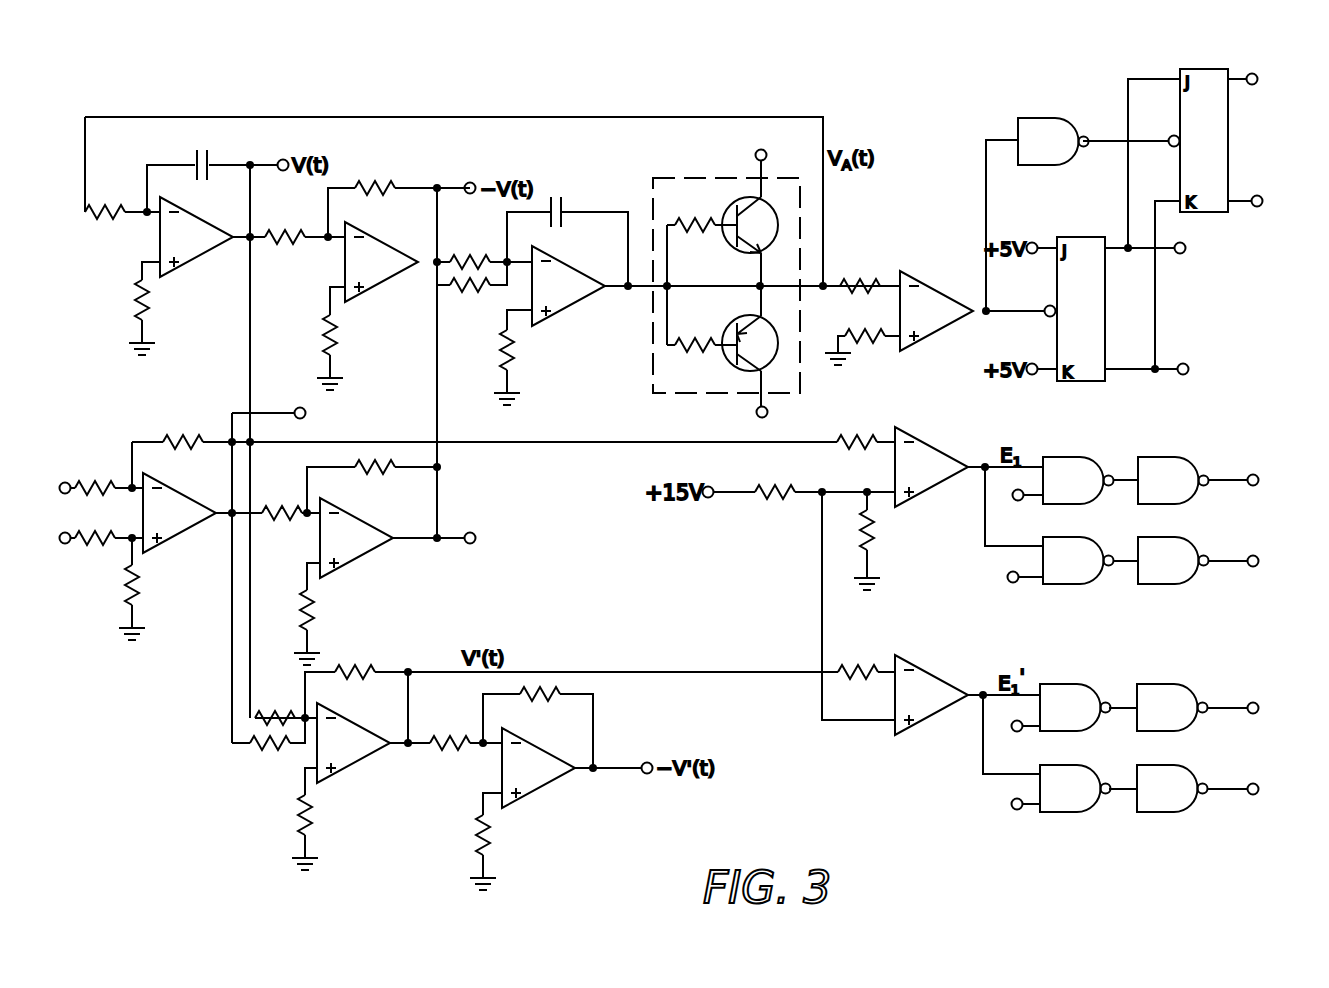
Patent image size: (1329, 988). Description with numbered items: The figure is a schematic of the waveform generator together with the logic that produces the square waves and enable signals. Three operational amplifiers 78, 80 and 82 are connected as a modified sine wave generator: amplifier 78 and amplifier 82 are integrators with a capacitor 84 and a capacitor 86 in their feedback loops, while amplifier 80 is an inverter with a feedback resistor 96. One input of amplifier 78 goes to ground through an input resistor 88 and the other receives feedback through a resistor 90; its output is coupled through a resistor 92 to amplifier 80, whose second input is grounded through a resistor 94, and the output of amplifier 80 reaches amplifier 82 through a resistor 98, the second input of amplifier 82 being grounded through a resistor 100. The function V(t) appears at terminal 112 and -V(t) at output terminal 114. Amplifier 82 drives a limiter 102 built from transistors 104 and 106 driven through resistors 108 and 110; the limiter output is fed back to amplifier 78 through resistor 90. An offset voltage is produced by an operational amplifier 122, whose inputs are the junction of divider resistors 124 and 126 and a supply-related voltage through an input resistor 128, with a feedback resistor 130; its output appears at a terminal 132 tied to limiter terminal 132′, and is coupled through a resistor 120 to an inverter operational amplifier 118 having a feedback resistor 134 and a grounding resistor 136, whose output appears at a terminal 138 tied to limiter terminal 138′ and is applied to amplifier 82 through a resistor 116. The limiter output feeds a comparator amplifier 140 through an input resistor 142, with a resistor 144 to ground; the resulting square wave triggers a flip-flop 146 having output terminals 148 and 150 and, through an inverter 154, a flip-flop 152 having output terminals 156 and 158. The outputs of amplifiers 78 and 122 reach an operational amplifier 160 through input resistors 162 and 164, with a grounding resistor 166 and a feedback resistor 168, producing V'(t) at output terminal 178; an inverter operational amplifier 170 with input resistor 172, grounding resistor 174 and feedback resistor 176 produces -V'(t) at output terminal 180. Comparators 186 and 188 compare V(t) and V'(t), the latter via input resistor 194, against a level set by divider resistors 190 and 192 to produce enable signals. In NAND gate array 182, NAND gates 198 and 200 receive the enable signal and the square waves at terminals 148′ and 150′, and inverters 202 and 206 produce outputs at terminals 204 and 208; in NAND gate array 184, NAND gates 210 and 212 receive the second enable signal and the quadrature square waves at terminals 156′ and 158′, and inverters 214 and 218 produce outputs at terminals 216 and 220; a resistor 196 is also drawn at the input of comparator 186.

The operational amplifier 78 is at (190, 236).
The operational amplifier 80 is at (375, 259).
The operational amplifier 82 is at (560, 286).
The capacitor 84 is at (206, 156).
The capacitor 86 is at (564, 206).
The input resistor 88 is at (132, 302).
The resistor 90 is at (100, 216).
The resistor 92 is at (285, 234).
The resistor 94 is at (328, 318).
The resistor 96 is at (379, 186).
The resistor 98 is at (468, 259).
The resistor 100 is at (512, 355).
The limiter 102 is at (692, 178).
The transistor 104 is at (727, 252).
The transistor 106 is at (738, 318).
The resistor 108 is at (693, 219).
The resistor 110 is at (696, 352).
The terminal 112 is at (286, 160).
The output terminal 114 is at (468, 182).
The resistor 116 is at (468, 301).
The operational amplifier 118 is at (355, 538).
The resistor 120 is at (274, 507).
The operational amplifier 122 is at (180, 504).
The resistor 124 is at (94, 547).
The resistor 126 is at (140, 586).
The input resistor 128 is at (89, 478).
The resistor 130 is at (180, 434).
The terminal 132 is at (306, 412).
The terminal of the limiter 132′ is at (756, 414).
The resistor 134 is at (366, 470).
The resistor 136 is at (312, 608).
The terminal 138 is at (470, 532).
The terminal of the limiter 138′ is at (762, 150).
The comparator amplifier 140 is at (938, 288).
The input resistor 142 is at (853, 276).
The resistor 144 is at (866, 336).
The flip-flop 146 is at (1076, 237).
The output terminal 148 is at (1186, 248).
The terminal 148′ is at (1018, 501).
The output terminal 150 is at (1188, 364).
The terminal 150′ is at (1008, 582).
The flip-flop 152 is at (1238, 142).
The inverter 154 is at (1030, 118).
The output terminal 156 is at (1260, 74).
The terminal 156′ is at (1012, 732).
The output terminal 158 is at (1262, 196).
The terminal 158′ is at (1012, 810).
The operational amplifier 160 is at (354, 740).
The input resistor 162 is at (273, 712).
The input resistor 164 is at (264, 760).
The resistor 166 is at (310, 822).
The resistor 168 is at (363, 656).
The operational amplifier 170 is at (536, 776).
The input resistor 172 is at (446, 738).
The resistor 174 is at (490, 838).
The resistor 176 is at (532, 698).
The output terminal 178 is at (411, 670).
The output terminal 180 is at (648, 776).
The NAND gate array 182 is at (1305, 521).
The NAND gate array 184 is at (1292, 750).
The comparator 186 is at (938, 454).
The comparator 188 is at (936, 680).
The resistor 190 is at (768, 490).
The resistor 192 is at (874, 536).
The input resistor 194 is at (858, 666).
The resistor 196 is at (852, 434).
The NAND gate 198 is at (1078, 462).
The NAND gate 200 is at (1086, 556).
The inverter 202 is at (1178, 462).
The terminal 204 is at (1254, 476).
The inverter 206 is at (1178, 556).
The terminal 208 is at (1254, 567).
The NAND gate 210 is at (1076, 688).
The NAND gate 212 is at (1082, 786).
The inverter 214 is at (1178, 688).
The terminal 216 is at (1258, 702).
The inverter 218 is at (1168, 800).
The terminal 220 is at (1254, 795).